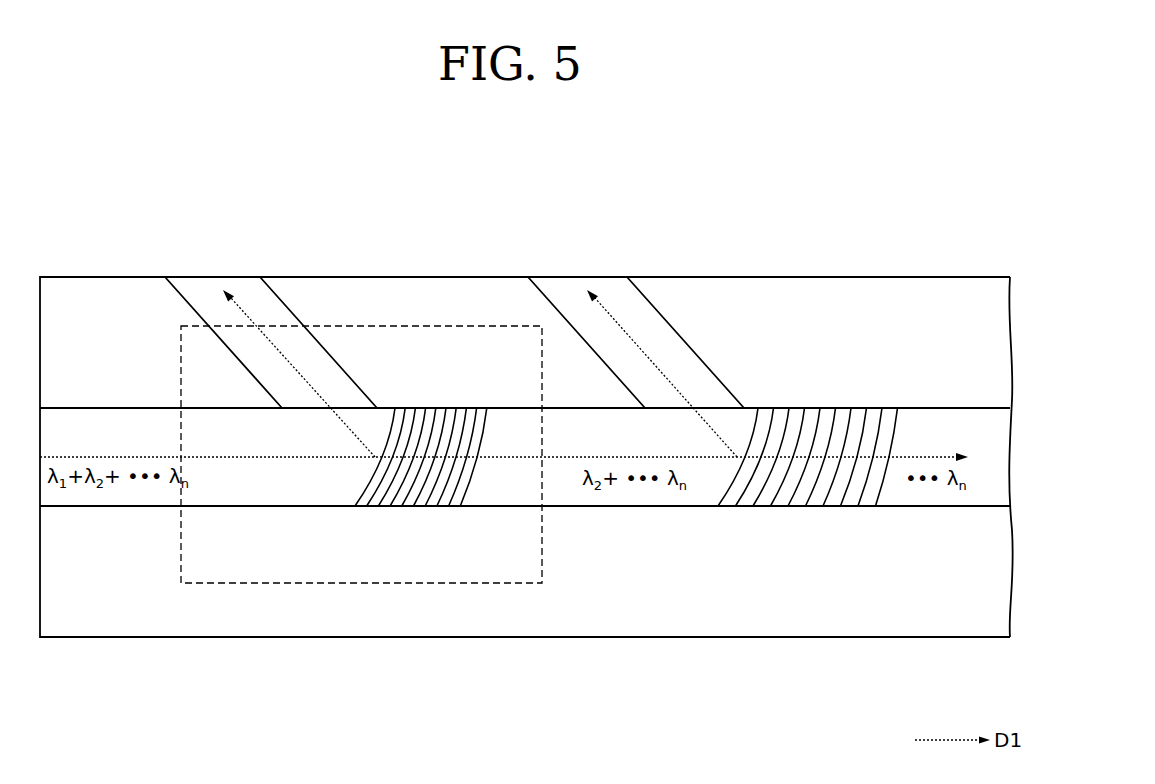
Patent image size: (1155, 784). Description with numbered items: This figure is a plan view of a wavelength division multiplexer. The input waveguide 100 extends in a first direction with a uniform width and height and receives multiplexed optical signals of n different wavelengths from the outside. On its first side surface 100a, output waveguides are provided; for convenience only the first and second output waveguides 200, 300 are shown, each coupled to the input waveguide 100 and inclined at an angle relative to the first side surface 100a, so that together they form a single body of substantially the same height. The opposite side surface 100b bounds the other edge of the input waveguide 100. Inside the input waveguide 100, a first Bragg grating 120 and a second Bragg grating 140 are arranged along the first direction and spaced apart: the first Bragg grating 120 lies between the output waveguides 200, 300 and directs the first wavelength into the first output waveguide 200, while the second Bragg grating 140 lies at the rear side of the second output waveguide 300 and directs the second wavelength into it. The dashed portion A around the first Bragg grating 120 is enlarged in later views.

The input waveguide 100 is at (102, 408).
The first side surface 100a is at (968, 408).
The lower surface of optical waveguide 100b is at (968, 506).
The first Bragg grating 120 is at (408, 520).
The second Bragg grating 140 is at (801, 520).
The first output waveguide 200 is at (288, 310).
The second output waveguide 300 is at (653, 310).
The portion A is at (474, 326).